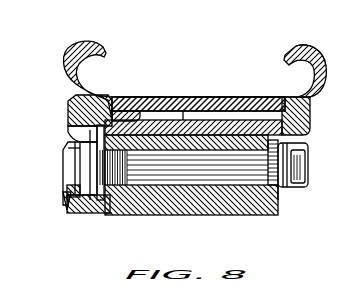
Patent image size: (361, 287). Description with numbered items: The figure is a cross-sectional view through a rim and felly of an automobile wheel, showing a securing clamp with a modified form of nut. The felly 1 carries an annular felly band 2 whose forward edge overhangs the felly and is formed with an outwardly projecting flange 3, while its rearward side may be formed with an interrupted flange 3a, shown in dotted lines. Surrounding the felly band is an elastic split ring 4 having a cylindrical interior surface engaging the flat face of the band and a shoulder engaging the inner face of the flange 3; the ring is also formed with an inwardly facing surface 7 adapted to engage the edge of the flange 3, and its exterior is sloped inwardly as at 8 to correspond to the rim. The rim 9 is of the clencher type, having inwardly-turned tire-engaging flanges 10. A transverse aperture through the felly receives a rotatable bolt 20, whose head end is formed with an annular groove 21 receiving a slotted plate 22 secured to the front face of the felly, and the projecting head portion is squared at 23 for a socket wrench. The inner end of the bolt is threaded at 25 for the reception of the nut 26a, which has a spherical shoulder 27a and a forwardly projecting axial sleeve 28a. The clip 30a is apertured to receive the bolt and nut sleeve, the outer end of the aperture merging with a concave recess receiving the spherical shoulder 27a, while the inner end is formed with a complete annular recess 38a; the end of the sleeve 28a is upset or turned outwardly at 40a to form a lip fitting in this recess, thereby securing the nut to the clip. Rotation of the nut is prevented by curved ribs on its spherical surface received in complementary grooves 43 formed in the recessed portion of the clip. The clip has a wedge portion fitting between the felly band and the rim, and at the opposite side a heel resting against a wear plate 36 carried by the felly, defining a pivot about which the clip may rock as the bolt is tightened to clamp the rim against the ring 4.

The felly 1 is at (180, 200).
The felly band 2 is at (181, 97).
The flange 3 is at (306, 119).
The interrupted flange 3a is at (115, 98).
The elastic split ring 4 is at (292, 97).
The inwardly facing surface 7 is at (311, 103).
The sloped exterior surface 8 is at (312, 99).
The rim 9 is at (148, 97).
The tire-engaging flanges 10 is at (87, 50).
The bolt 20 is at (230, 178).
The annular groove 21 is at (266, 158).
The slotted plate 22 is at (282, 192).
The squared head portion 23 is at (301, 170).
The threaded inner end 25 is at (66, 170).
The nut 26a is at (68, 135).
The spherical shoulder 27a is at (78, 196).
The axial sleeve 28a is at (86, 215).
The clip 30a is at (72, 110).
The wear plate 36 is at (110, 213).
The annular recess 38a is at (99, 215).
The lip 40a is at (78, 150).
The grooves 43 is at (84, 206).